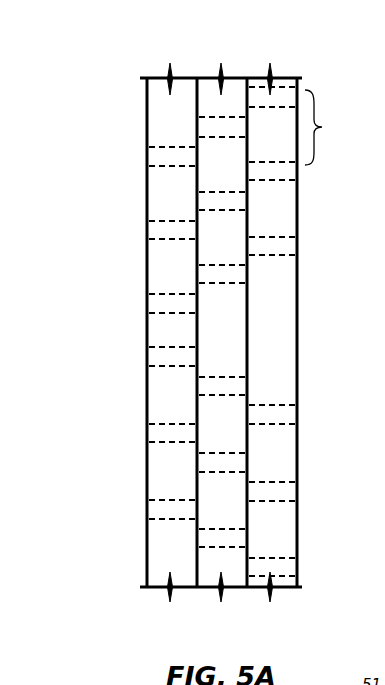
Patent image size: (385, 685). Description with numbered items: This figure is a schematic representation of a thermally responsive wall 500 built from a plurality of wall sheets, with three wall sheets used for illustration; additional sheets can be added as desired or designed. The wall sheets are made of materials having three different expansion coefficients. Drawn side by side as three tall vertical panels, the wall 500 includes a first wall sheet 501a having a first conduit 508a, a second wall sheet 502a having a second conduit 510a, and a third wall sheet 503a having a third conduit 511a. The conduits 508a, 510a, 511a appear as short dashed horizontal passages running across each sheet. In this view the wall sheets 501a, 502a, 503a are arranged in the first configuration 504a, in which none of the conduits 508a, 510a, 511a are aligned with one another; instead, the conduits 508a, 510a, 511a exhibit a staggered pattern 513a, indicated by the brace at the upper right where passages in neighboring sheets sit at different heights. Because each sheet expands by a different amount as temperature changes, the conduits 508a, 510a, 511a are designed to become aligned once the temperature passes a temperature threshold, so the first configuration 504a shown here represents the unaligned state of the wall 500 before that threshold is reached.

The wall 500 is at (126, 489).
The first wall sheet 501a is at (163, 574).
The second wall sheet 502a is at (211, 576).
The third wall sheet 503a is at (280, 578).
The first configuration 504a is at (146, 420).
The first conduit 508a is at (172, 143).
The second conduit 510a is at (222, 118).
The third conduit 511a is at (262, 87).
The staggered pattern 513a is at (340, 127).